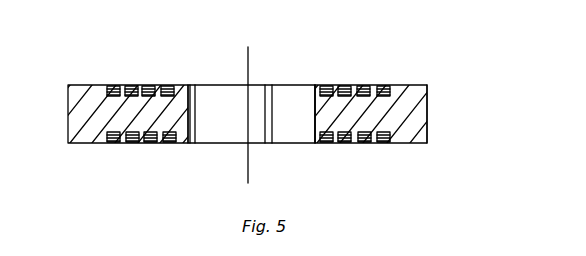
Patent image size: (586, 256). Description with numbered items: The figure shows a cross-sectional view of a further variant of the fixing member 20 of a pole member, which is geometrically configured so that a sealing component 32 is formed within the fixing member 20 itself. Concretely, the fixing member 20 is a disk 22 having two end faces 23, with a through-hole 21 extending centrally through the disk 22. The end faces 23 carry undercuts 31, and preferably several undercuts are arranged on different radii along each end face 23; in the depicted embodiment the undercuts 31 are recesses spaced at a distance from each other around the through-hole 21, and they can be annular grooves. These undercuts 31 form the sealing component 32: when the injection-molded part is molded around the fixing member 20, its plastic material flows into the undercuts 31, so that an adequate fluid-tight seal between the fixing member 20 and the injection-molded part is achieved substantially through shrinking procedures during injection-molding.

The fixing member 20 is at (465, 77).
The through-hole 21 is at (212, 133).
The disk 22 is at (421, 126).
The end faces 23 is at (414, 80).
The undercuts 31 is at (169, 144).
The sealing component 32 is at (381, 84).